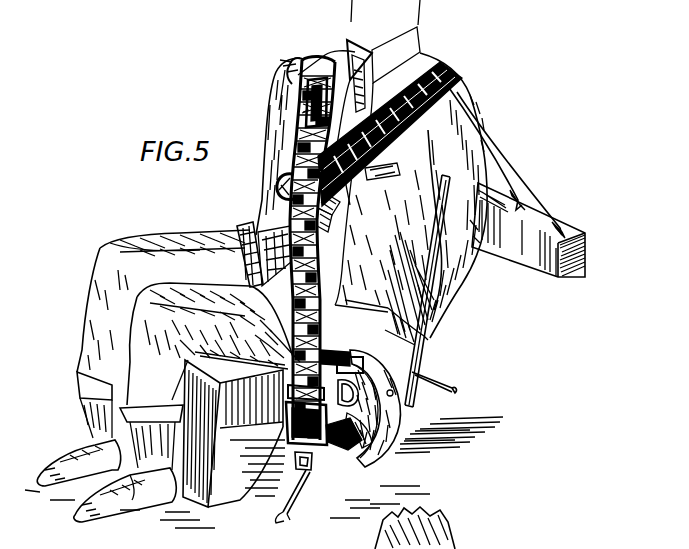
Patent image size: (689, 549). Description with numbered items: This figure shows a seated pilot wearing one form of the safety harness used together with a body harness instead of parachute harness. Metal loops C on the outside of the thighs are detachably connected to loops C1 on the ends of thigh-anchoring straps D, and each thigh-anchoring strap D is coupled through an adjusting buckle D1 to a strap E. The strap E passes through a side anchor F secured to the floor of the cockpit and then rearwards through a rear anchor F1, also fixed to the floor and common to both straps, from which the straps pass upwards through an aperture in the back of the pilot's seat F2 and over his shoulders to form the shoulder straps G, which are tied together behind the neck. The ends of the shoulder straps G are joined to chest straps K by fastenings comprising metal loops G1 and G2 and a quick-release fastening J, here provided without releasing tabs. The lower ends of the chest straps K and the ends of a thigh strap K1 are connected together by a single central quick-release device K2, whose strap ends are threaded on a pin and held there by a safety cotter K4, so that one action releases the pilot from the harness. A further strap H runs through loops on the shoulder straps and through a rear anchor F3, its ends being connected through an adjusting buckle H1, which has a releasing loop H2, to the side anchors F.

The shoulder straps G is at (343, 56).
The metal loops G1 is at (310, 86).
The metal loops G2 is at (312, 60).
The quick-release fastening J is at (308, 96).
The chest straps K is at (337, 184).
The thigh strap K1 is at (262, 224).
The central quick-release device K2 is at (278, 181).
The safety cotter K4 is at (327, 207).
The strap H is at (490, 152).
The adjusting buckle H1 is at (352, 354).
The releasing loop H2 is at (372, 398).
The side anchor F is at (312, 420).
The rear anchor F1 is at (422, 378).
The pilot's seat F2 is at (418, 328).
The rear anchor F3 is at (522, 195).
The strap E is at (350, 440).
The thigh-anchoring strap D is at (300, 396).
The adjusting buckle D1 is at (300, 417).
The metal loops C is at (300, 360).
The loops C1 is at (282, 348).